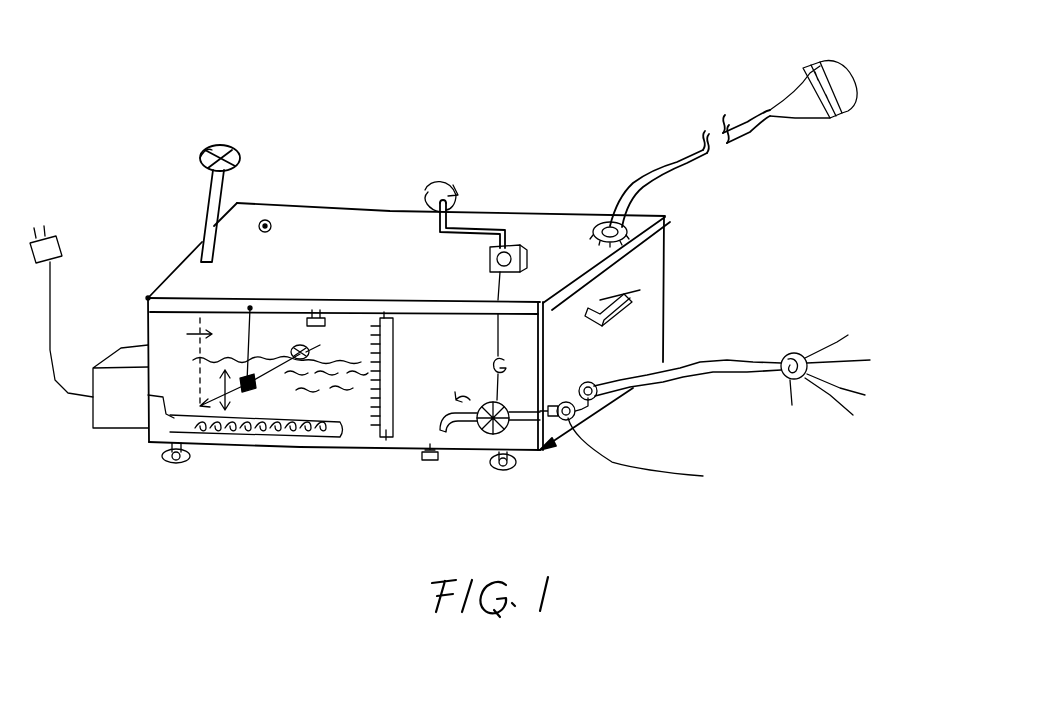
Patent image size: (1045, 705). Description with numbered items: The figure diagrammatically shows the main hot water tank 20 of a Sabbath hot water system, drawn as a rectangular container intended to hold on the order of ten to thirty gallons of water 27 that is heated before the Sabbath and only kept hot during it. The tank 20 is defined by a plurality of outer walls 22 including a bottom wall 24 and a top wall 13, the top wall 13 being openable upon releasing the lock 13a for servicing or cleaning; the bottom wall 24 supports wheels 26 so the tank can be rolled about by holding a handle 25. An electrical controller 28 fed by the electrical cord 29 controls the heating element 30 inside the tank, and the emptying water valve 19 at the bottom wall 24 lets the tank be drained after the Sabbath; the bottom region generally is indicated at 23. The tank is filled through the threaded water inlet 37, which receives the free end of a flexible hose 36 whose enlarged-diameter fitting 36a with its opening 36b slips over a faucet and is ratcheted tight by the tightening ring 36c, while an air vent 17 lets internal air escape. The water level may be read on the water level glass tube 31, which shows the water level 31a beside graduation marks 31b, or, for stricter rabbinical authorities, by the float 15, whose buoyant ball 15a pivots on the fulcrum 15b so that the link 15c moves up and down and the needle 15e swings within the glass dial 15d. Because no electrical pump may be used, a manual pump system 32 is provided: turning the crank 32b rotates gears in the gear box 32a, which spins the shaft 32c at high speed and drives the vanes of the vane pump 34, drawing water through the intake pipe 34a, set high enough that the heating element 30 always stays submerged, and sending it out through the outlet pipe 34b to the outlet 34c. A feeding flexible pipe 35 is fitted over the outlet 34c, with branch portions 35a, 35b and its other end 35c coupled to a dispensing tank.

The top wall 13 is at (330, 222).
The lock 13a is at (310, 312).
The float 15 is at (270, 366).
The buoyant ball 15a is at (322, 347).
The fulcrum 15b is at (262, 334).
The link 15c is at (184, 363).
The glass dial 15d is at (220, 146).
The needle 15e is at (200, 168).
The air vent 17 is at (268, 218).
The emptying water valve 19 is at (430, 463).
The main hot water tank 20 is at (308, 517).
The outer walls 22 is at (653, 276).
The bottom wall 23 is at (405, 435).
The bottom wall 24 is at (289, 448).
The handle 25 is at (637, 312).
The wheels 26 is at (170, 468).
The water 27 is at (350, 388).
The electrical controller 28 is at (133, 352).
The electrical cord 29 is at (60, 246).
The heating element 30 is at (240, 432).
The water level glass tube 31 is at (396, 360).
The water level 31a is at (399, 391).
The graduation marks 31b is at (384, 318).
The manual pump system 32 is at (500, 240).
The gear box 32a is at (522, 258).
The crank 32b is at (436, 238).
The shaft 32c is at (494, 330).
The vane pump 34 is at (512, 428).
The intake pipe 34a is at (464, 422).
The outlet pipe 34b is at (568, 418).
The outlet 34c is at (667, 457).
The feeding flexible pipe 35 is at (748, 366).
The hose branches 35a is at (822, 410).
The hose branch 35b is at (838, 348).
The other end 35c is at (588, 382).
The flexible hose 36 is at (678, 165).
The enlarged-diameter fitting 36a is at (800, 90).
The opening 36b is at (843, 85).
The tightening ring 36c is at (833, 120).
The threaded water inlet 37 is at (607, 221).